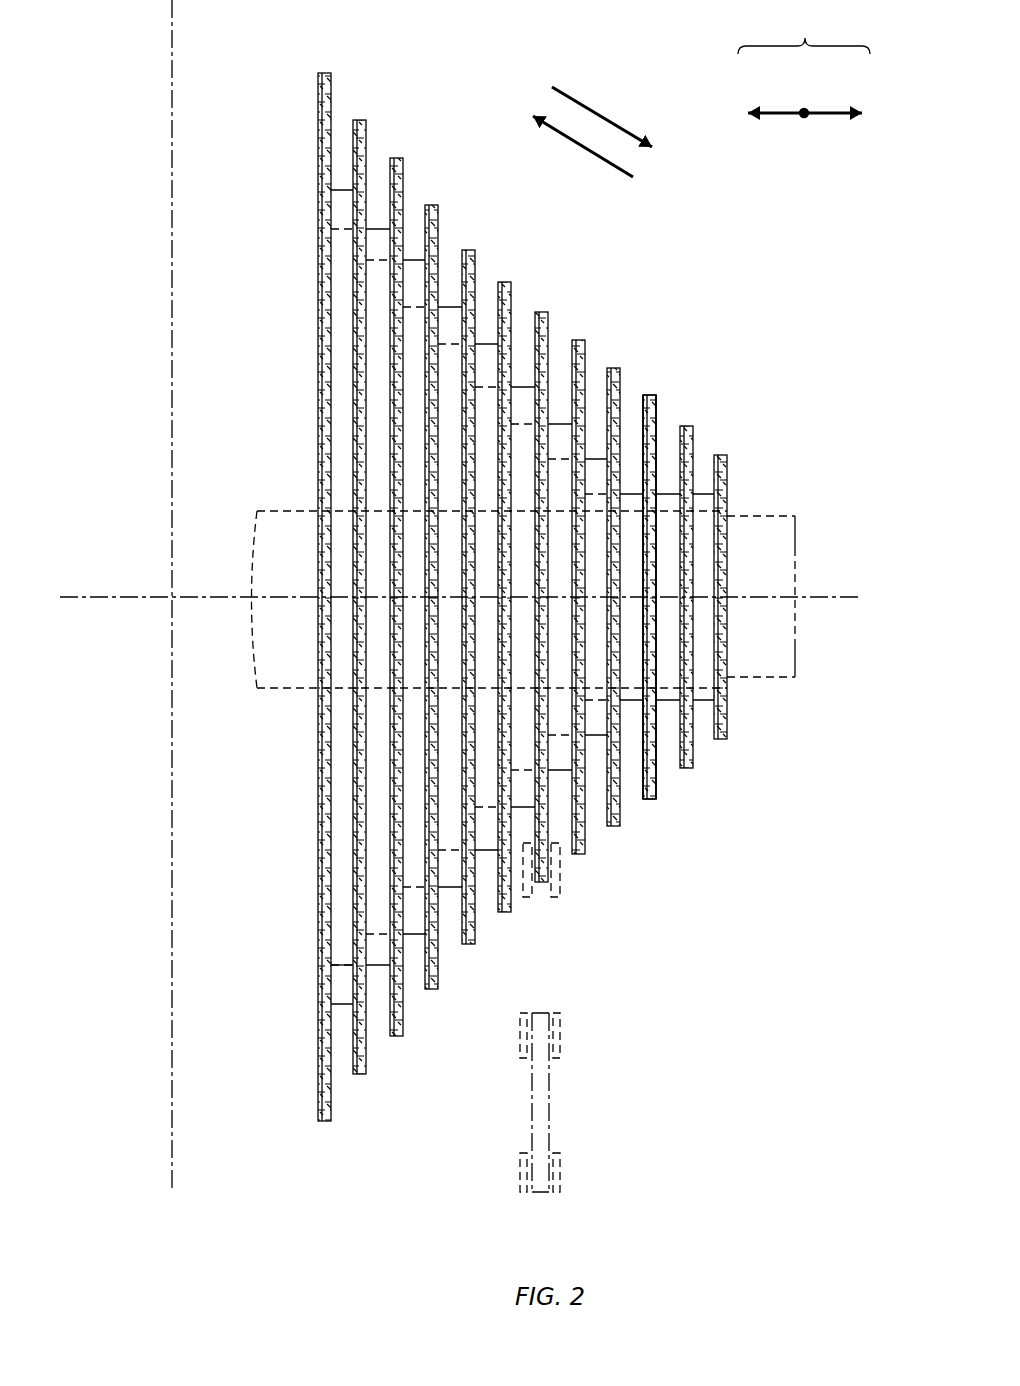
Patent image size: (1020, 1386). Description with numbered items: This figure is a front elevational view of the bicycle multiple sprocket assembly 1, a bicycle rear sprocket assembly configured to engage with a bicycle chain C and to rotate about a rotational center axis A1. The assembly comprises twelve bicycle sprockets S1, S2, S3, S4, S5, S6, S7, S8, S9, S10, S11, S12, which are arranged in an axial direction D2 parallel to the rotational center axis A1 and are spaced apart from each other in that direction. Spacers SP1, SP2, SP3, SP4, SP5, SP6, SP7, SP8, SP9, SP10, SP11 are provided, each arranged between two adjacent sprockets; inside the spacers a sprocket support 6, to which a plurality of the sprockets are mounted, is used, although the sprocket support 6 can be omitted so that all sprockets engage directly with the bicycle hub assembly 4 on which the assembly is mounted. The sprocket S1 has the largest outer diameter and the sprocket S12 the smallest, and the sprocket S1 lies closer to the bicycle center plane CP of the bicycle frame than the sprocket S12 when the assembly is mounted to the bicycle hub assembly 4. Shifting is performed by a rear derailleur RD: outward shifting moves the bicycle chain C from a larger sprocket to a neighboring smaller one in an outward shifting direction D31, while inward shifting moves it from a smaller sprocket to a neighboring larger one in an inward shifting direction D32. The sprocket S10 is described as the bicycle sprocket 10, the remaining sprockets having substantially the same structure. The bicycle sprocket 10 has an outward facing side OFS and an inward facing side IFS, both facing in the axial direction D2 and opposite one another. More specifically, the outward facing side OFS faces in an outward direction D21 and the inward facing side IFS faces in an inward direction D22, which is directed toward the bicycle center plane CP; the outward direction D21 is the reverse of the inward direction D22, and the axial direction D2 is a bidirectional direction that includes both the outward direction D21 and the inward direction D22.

The bicycle multiple sprocket assembly 1 is at (462, 70).
The bicycle hub assembly 4 is at (282, 510).
The sprocket support 6 is at (340, 972).
The bicycle sprocket 10 is at (649, 597).
The bicycle sprocket S1 is at (323, 70).
The bicycle sprocket S2 is at (358, 117).
The bicycle sprocket S3 is at (395, 155).
The bicycle sprocket S4 is at (431, 202).
The bicycle sprocket S5 is at (468, 247).
The bicycle sprocket S6 is at (505, 279).
The bicycle sprocket S7 is at (541, 309).
The bicycle sprocket S8 is at (578, 337).
The bicycle sprocket S9 is at (613, 365).
The bicycle sprocket S10 is at (650, 392).
The bicycle sprocket S11 is at (687, 423).
The bicycle sprocket S12 is at (721, 452).
The spacer SP1 is at (343, 1007).
The spacer SP2 is at (377, 968).
The spacer SP3 is at (414, 937).
The spacer SP4 is at (450, 890).
The spacer SP5 is at (486, 853).
The spacer SP6 is at (518, 810).
The spacer SP7 is at (559, 773).
The spacer SP8 is at (596, 738).
The spacer SP9 is at (631, 703).
The spacer SP10 is at (668, 703).
The spacer SP11 is at (702, 703).
The inward facing side IFS is at (650, 413).
The outward facing side OFS is at (650, 413).
The bicycle center plane CP is at (170, 53).
The rotational center axis A1 is at (857, 597).
The bicycle chain C is at (557, 905).
The rear derailleur RD is at (560, 1098).
The axial direction D2 is at (804, 32).
The outward direction D21 is at (840, 110).
The inward direction D22 is at (774, 110).
The outward shifting direction D31 is at (603, 117).
The inward shifting direction D32 is at (582, 148).